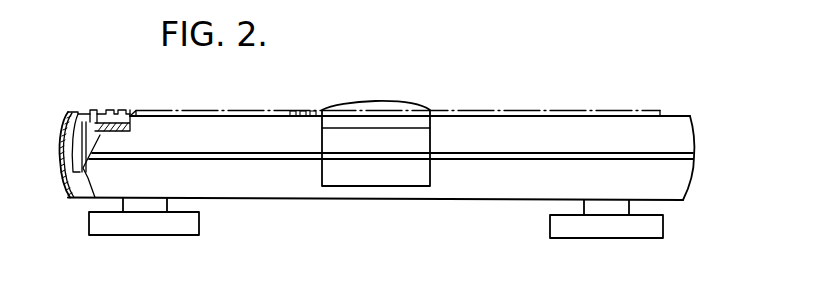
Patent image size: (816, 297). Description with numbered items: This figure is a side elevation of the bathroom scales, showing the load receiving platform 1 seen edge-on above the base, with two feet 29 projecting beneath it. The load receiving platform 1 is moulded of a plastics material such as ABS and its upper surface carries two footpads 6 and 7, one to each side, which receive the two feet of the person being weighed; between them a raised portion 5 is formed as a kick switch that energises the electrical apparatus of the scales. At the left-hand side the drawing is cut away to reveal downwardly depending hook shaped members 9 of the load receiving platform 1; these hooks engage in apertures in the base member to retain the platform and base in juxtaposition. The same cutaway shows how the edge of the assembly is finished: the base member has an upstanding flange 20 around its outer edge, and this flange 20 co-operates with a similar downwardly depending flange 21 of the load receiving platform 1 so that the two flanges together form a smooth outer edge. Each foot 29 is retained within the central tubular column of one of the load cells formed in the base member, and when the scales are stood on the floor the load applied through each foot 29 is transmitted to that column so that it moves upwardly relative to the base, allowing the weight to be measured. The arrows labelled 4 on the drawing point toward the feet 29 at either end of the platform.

The load receiving platform 1 is at (657, 133).
The foot 4 is at (211, 228).
The kick switch portion 5 is at (398, 168).
The footpad 6 is at (213, 111).
The footpad 7 is at (560, 111).
The hook shaped member 9 is at (107, 110).
The upstanding flange 20 is at (63, 175).
The downwardly depending flange 21 is at (62, 132).
The foot 29 is at (170, 227).